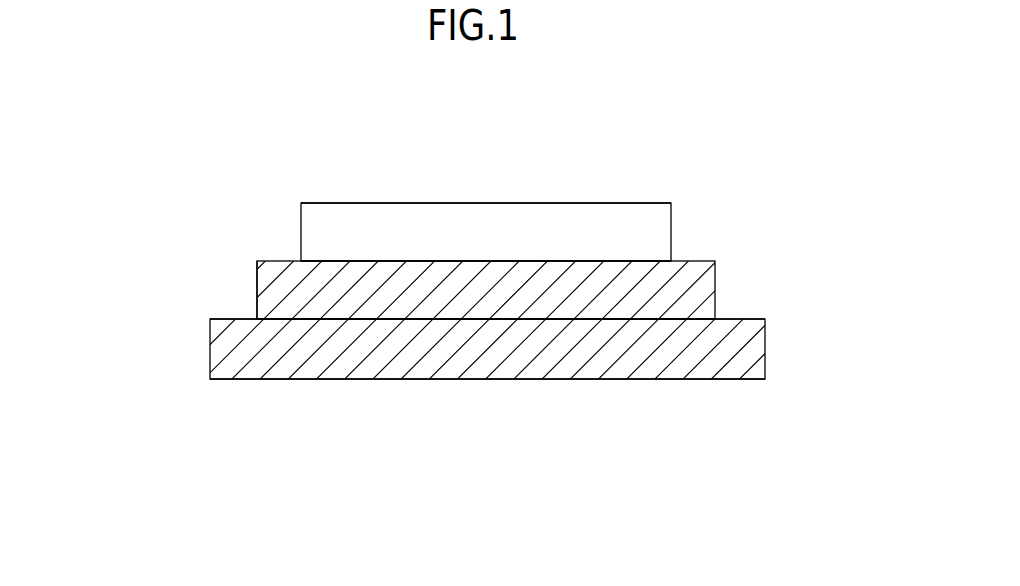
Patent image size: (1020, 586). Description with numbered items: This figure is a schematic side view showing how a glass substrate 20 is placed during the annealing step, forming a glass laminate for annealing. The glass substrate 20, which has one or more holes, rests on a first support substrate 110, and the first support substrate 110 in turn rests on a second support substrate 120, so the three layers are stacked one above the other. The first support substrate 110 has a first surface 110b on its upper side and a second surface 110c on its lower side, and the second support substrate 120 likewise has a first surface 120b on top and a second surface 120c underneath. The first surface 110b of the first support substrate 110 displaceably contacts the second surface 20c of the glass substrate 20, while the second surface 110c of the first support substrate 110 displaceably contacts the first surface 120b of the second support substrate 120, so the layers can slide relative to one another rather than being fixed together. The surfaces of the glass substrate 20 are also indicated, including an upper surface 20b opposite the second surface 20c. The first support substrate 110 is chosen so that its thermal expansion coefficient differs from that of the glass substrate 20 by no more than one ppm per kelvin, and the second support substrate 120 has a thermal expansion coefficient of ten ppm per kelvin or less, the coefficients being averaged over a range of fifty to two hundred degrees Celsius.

The glass substrate 20 is at (630, 237).
The upper surface of electronic component 20b is at (342, 200).
The second surface of glass substrate 20c is at (325, 254).
The first support substrate 110 is at (683, 300).
The first surface of first support substrate 110b is at (266, 256).
The second surface of first support substrate 110c is at (298, 307).
The second support substrate 120 is at (735, 357).
The first surface of second support substrate 120b is at (225, 317).
The second surface of second support substrate 120c is at (226, 379).